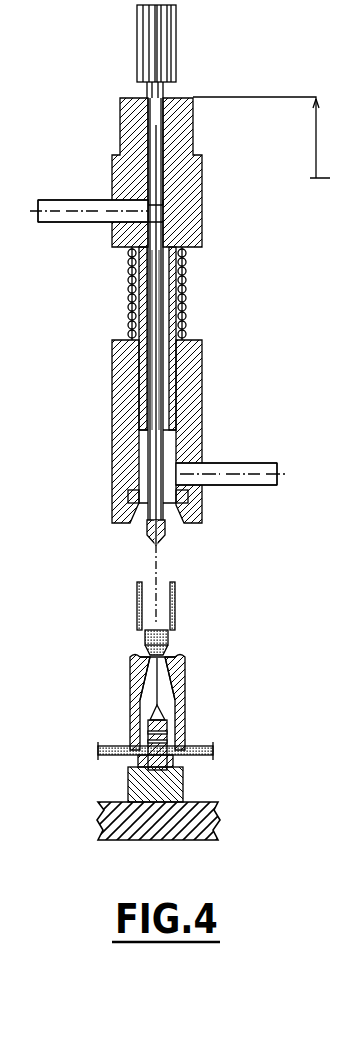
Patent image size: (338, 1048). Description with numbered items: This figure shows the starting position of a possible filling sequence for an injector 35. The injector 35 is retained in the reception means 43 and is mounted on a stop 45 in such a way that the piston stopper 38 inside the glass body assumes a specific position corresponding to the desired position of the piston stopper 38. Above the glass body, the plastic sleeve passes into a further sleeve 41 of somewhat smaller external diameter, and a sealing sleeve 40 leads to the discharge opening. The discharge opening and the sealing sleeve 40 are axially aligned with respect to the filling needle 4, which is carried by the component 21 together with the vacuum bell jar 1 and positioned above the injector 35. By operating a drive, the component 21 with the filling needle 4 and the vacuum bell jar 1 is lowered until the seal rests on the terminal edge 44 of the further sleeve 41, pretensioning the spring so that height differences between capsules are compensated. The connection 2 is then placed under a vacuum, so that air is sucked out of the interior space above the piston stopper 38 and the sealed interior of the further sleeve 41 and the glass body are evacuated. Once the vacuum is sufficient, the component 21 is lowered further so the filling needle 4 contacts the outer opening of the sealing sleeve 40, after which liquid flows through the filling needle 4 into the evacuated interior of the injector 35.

The vacuum bell jar 1 is at (190, 392).
The connection 2 is at (268, 462).
The filling needle 4 is at (166, 536).
The component 21 is at (195, 131).
The injector 35 is at (200, 684).
The piston stopper 38 is at (180, 722).
The sealing sleeve 40 is at (176, 625).
The further sleeve 41 is at (137, 617).
The reception means 43 is at (203, 756).
The terminal edge 44 is at (140, 582).
The stop 45 is at (128, 785).